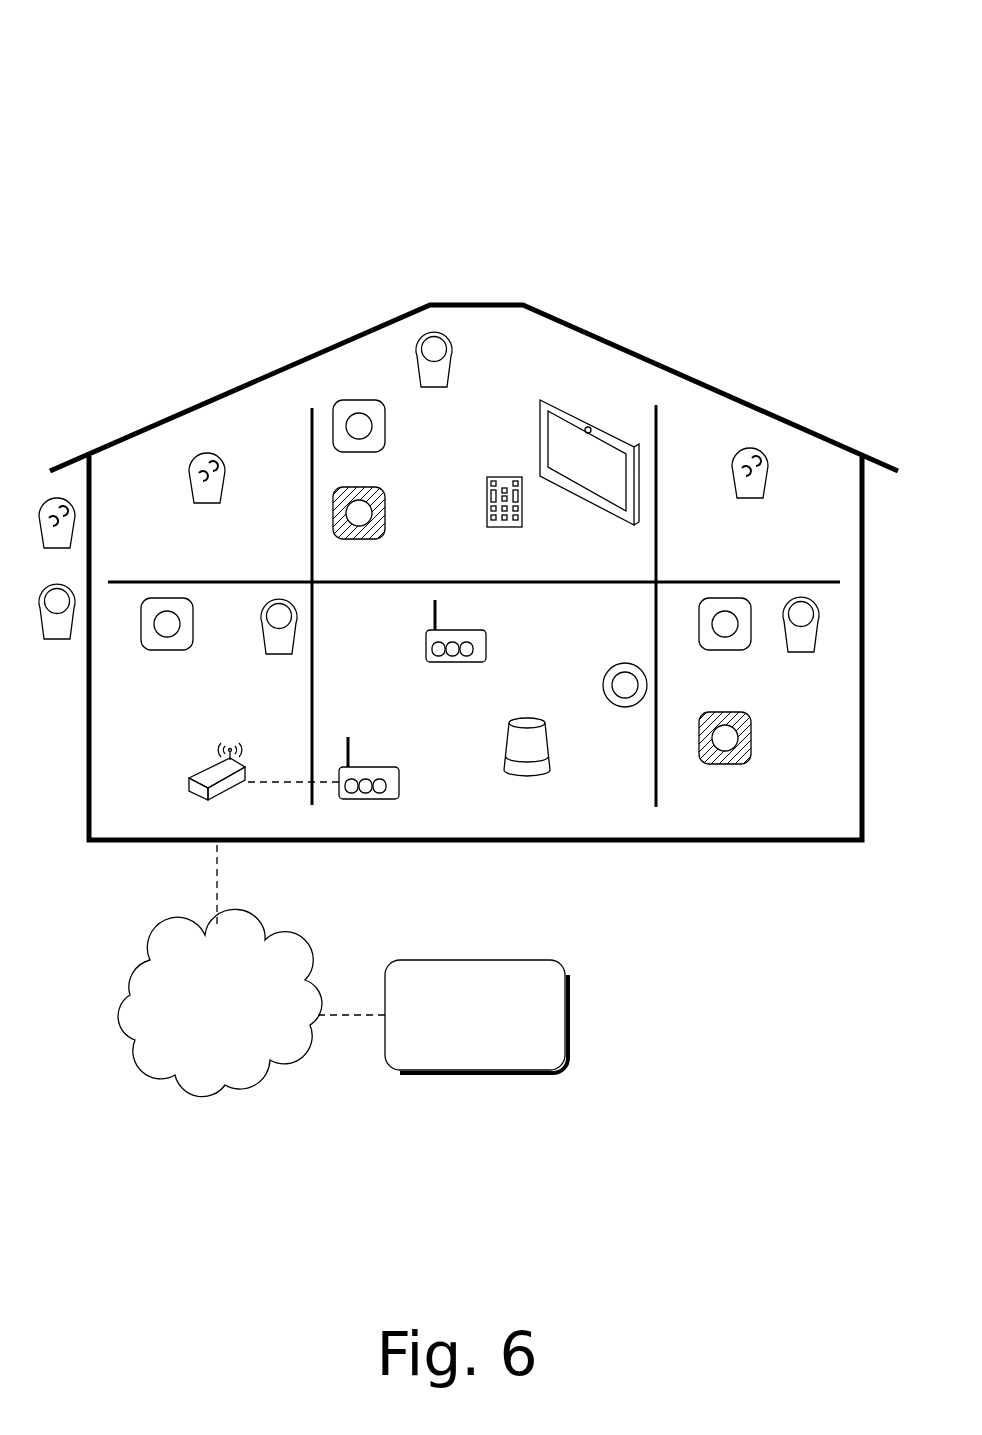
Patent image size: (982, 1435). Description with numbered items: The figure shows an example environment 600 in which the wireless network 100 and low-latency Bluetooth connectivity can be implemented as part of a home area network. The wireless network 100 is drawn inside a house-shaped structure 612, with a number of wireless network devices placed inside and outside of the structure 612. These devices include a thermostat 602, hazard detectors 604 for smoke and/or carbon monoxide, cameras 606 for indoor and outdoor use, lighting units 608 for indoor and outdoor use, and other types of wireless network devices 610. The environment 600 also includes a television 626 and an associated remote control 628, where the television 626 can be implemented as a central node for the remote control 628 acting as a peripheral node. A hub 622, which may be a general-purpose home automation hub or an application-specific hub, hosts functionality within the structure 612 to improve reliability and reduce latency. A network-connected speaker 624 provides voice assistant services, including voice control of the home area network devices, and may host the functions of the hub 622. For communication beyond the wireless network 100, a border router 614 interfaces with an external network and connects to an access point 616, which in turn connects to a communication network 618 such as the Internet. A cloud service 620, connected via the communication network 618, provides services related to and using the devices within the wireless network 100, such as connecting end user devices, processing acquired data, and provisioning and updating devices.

The environment 600 is at (108, 41).
The wireless network 100 is at (378, 365).
The structure 612 is at (216, 392).
The lighting units 608 is at (188, 524).
The cameras 606 is at (415, 411).
The hazard detectors 604 is at (340, 478).
The wireless network devices 610 is at (340, 564).
The television 626 is at (556, 536).
The remote control 628 is at (485, 554).
The hub 622 is at (433, 689).
The border router 614 is at (348, 826).
The access point 616 is at (199, 831).
The network-connected speaker 624 is at (508, 808).
The thermostat 602 is at (606, 736).
The communication network 618 is at (198, 1074).
The cloud service 620 is at (456, 1056).